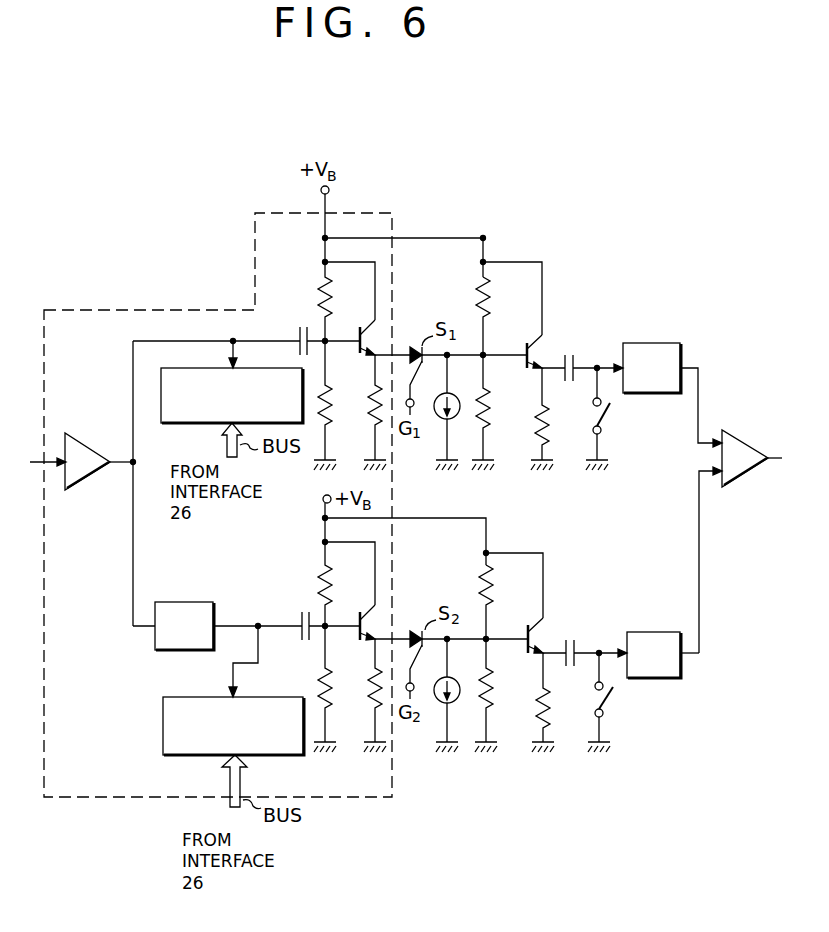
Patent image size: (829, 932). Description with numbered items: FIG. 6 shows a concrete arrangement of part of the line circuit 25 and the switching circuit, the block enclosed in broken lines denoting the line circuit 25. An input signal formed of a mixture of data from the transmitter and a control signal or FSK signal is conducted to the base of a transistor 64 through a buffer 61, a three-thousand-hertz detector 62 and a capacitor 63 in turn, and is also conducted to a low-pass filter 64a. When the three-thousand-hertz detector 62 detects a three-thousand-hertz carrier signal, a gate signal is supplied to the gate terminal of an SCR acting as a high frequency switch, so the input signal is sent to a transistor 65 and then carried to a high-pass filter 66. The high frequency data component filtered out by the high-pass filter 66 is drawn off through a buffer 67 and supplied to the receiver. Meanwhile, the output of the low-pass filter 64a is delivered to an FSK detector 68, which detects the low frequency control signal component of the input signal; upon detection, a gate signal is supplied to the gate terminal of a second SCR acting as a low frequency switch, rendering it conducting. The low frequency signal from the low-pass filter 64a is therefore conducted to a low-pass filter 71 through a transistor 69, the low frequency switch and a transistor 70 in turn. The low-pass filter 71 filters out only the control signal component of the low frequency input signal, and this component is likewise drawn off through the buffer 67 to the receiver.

The line circuit 25 is at (125, 308).
The buffer 61 is at (75, 440).
The 3000 Hz detector 62 is at (166, 419).
The capacitor 63 is at (302, 319).
The transistor 64 is at (376, 337).
The low-pass filter 64a is at (192, 602).
The transistor 65 is at (540, 350).
The high-pass filter 66 is at (653, 343).
The buffer 67 is at (736, 439).
The FSK detector 68 is at (161, 720).
The transistor 69 is at (378, 629).
The transistor 70 is at (538, 638).
The low-pass filter 71 is at (653, 632).